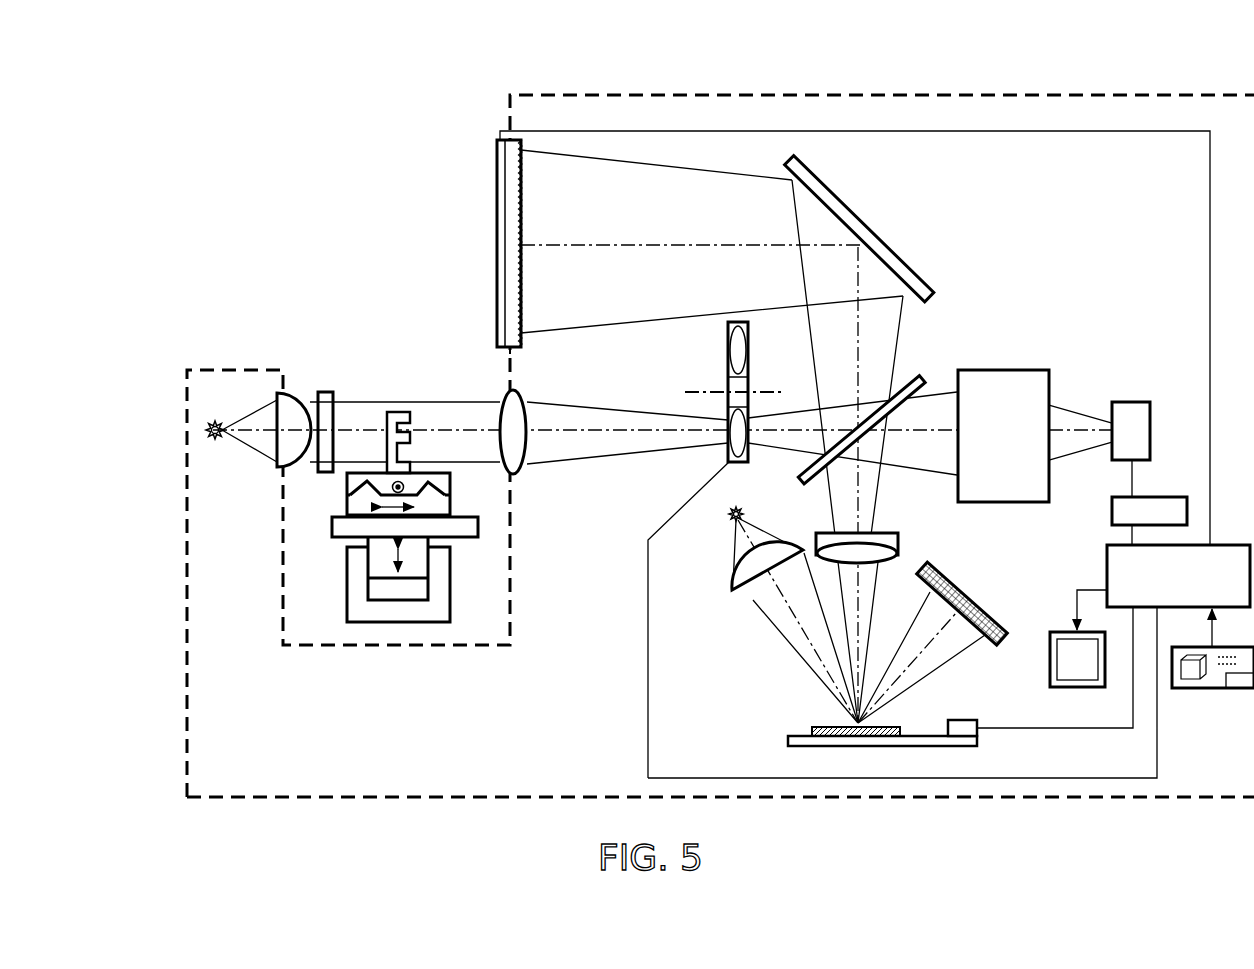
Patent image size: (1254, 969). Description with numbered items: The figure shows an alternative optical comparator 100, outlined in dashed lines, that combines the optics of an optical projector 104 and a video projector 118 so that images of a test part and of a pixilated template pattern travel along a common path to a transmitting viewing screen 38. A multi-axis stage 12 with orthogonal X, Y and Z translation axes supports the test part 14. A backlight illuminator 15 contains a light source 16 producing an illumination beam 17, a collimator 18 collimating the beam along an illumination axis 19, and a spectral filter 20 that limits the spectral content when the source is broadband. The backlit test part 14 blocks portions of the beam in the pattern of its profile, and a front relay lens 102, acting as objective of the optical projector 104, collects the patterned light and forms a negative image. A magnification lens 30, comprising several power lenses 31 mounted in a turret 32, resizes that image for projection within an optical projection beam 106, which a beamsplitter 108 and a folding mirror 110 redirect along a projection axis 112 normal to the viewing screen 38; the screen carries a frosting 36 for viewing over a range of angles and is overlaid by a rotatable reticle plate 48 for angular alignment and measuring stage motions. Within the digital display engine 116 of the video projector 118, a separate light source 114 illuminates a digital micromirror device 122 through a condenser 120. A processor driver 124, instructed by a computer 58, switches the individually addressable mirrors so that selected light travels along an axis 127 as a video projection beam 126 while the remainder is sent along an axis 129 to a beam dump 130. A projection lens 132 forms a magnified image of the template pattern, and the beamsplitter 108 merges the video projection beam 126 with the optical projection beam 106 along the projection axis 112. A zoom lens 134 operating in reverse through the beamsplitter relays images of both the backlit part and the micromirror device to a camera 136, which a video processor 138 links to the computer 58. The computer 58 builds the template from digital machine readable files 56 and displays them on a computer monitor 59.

The optical comparator 100 is at (588, 90).
The multi-axis stage 12 is at (345, 588).
The test part 14 is at (395, 410).
The backlight illuminator 15 is at (658, 456).
The light source 16 is at (217, 422).
The illumination beam 17 is at (248, 450).
The collimator 18 is at (283, 393).
The illumination axis 19 is at (358, 429).
The spectral filter 20 is at (322, 391).
The magnification lens 30 is at (725, 397).
The power lenses 31 is at (748, 356).
The turret 32 is at (728, 324).
The frosting 36 is at (521, 291).
The viewing screen 38 is at (501, 247).
The rotatable reticle plate 48 is at (504, 275).
The digital machine readable files 56 is at (1196, 690).
The computer 58 is at (1178, 576).
The computer monitor 59 is at (1070, 688).
The front relay lens 102 is at (506, 392).
The optical projector 104 is at (606, 487).
The optical projection beam 106 is at (606, 406).
The beamsplitter 108 is at (912, 382).
The folding mirror 110 is at (808, 200).
The projection axis 112 is at (590, 245).
The light source 114 is at (730, 519).
The digital display engine 116 is at (757, 615).
The video projector 118 is at (977, 560).
The condenser 120 is at (740, 597).
The digital micromirror device 122 is at (830, 727).
The processor driver 124 is at (959, 720).
The video projection beam 126 is at (642, 162).
The axis of the video projection beam 127 is at (853, 498).
The axis to beam dump 129 is at (934, 641).
The beam dump 130 is at (933, 588).
The projection lens 132 is at (899, 546).
The zoom lens 134 is at (1003, 436).
The camera 136 is at (1128, 400).
The video processor 138 is at (1112, 507).